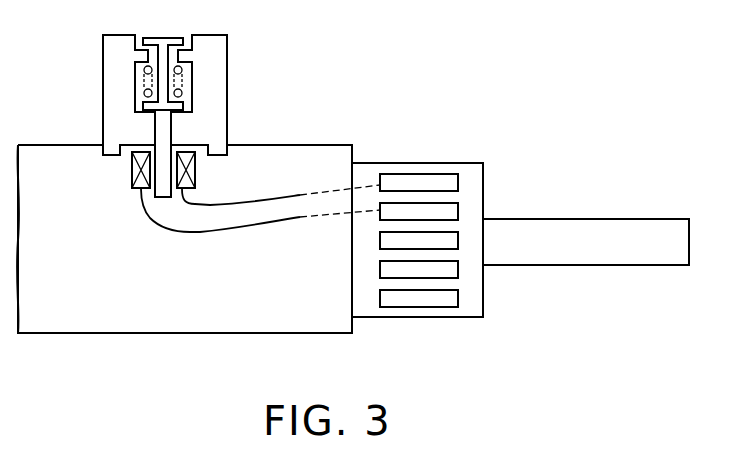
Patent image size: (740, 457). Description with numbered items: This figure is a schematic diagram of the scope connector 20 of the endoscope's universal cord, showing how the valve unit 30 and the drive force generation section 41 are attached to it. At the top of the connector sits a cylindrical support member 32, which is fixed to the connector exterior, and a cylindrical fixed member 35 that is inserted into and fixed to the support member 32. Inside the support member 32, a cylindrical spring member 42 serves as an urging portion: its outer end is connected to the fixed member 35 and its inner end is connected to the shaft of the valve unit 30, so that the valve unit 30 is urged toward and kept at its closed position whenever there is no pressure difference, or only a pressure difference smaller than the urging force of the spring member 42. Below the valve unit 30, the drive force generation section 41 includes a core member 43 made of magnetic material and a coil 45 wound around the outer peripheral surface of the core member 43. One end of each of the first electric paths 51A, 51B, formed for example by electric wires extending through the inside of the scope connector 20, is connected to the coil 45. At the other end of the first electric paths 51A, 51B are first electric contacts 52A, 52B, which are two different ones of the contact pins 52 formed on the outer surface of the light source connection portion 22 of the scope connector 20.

The scope connector 20 is at (238, 312).
The light source connection portion 22 is at (469, 163).
The valve unit 30 is at (157, 33).
The support member 32 is at (218, 50).
The fixed member 35 is at (208, 94).
The drive force generation section 41 is at (85, 208).
The spring member 42 is at (182, 70).
The core member 43 is at (153, 196).
The coil 45 is at (140, 190).
The first electric path 51A is at (247, 201).
The first electric path 51B is at (245, 226).
The contact pins 52 is at (437, 300).
The first electric contact 52A is at (410, 180).
The first electric contact 52B is at (455, 213).